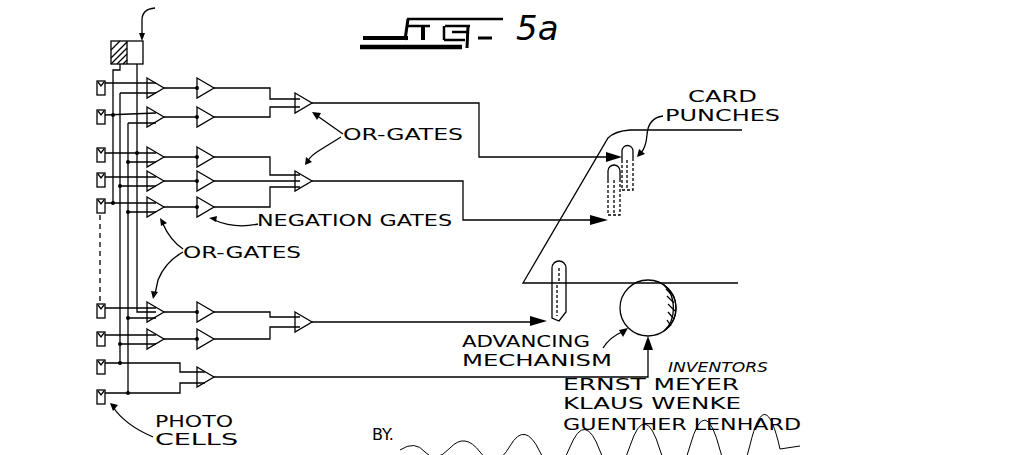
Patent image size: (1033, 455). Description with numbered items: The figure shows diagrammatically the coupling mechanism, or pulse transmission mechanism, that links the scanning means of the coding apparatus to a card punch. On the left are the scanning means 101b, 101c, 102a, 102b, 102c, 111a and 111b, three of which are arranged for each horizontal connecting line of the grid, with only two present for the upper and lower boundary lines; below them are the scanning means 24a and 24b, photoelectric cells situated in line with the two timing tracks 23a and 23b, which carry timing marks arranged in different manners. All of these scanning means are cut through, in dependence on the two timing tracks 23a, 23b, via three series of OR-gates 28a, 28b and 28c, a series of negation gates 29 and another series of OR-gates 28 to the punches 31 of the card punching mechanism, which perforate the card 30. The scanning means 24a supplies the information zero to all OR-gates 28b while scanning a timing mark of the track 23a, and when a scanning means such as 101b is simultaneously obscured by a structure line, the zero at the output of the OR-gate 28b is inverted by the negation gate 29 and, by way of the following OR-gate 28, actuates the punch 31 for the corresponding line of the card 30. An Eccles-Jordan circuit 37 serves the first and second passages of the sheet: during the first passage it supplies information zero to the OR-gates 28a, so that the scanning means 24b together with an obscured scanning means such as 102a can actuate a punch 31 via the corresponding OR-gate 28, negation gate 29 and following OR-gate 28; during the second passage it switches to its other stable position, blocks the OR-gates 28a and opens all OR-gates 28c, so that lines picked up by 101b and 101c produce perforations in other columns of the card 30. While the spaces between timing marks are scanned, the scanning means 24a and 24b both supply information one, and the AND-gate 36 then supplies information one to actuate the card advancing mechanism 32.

The Eccles-Jordan circuit 37 is at (145, 54).
The scanning means 101b is at (100, 87).
The scanning means 101c is at (100, 116).
The scanning means 102a is at (100, 154).
The scanning means 102b is at (100, 180).
The scanning means 102c is at (100, 206).
The scanning means 111a is at (104, 311).
The scanning means 111b is at (104, 339).
The scanning means 24a is at (130, 367).
The scanning means 24b is at (130, 394).
The OR-gates 28a is at (157, 160).
The OR-gates 28b is at (157, 91).
The OR-gates 28c is at (157, 121).
The OR-gates 28 is at (306, 104).
The negation gates 29 is at (208, 83).
The AND-gate 36 is at (207, 378).
The card 30 is at (545, 246).
The punches 31 is at (619, 205).
The card advancing mechanism 32 is at (669, 313).
The timing track 23a is at (648, 12).
The timing track 23b is at (716, 12).